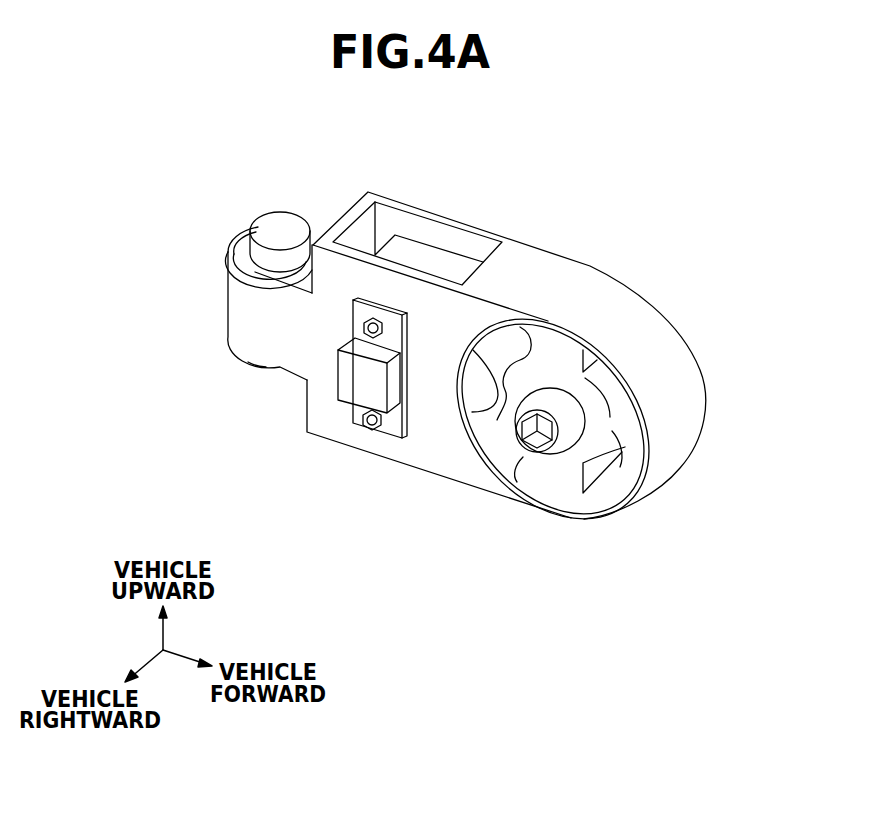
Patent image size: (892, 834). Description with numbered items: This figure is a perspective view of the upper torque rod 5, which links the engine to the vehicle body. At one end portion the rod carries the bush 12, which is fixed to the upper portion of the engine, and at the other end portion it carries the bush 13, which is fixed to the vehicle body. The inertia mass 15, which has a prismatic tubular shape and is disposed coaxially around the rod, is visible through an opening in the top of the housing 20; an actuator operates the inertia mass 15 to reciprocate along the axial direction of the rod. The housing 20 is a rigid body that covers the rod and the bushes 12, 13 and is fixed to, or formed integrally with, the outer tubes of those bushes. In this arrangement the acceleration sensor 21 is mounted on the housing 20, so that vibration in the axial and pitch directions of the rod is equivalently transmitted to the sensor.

The upper torque rod 5 is at (680, 228).
The bush 12 is at (613, 441).
The bush 13 is at (245, 235).
The inertia mass 15 is at (421, 258).
The housing 20 is at (418, 466).
The acceleration sensor 21 is at (350, 382).